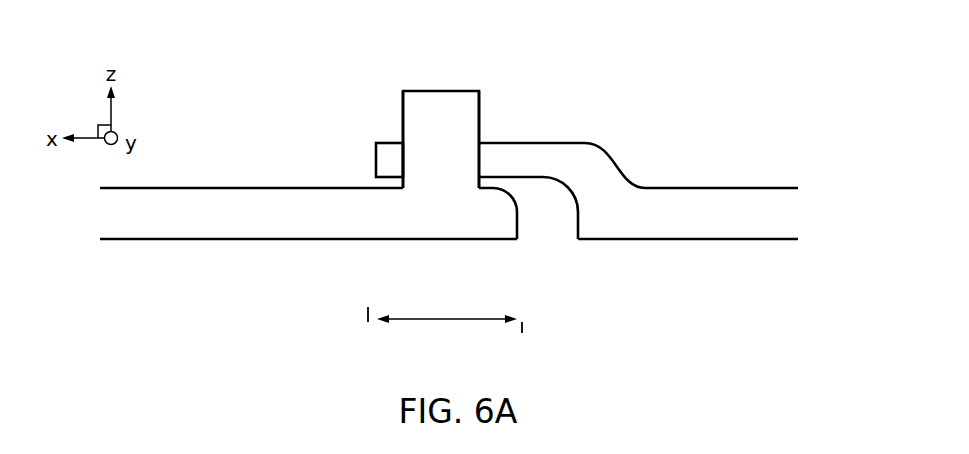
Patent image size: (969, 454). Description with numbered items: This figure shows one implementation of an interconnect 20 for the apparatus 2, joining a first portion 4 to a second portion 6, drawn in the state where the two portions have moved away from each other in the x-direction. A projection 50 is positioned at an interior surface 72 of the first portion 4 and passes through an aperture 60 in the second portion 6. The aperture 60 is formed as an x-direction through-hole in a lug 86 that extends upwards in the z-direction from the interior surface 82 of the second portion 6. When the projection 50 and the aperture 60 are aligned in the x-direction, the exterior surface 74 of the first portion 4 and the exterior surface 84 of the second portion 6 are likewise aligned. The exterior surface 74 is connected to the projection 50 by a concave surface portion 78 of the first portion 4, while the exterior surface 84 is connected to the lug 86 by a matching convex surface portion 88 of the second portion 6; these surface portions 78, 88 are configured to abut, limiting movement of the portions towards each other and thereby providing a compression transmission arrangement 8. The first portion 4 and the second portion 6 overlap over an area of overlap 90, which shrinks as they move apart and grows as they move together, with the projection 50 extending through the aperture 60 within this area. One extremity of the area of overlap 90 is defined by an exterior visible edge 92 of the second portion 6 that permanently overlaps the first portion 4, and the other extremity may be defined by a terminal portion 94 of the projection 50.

The apparatus 2 is at (192, 56).
The first portion 4 is at (775, 188).
The second portion 6 is at (452, 90).
The compression transmission arrangement 8 is at (561, 256).
The interconnect 20 is at (771, 82).
The projection 50 is at (563, 143).
The aperture 60 is at (480, 117).
The interior surface of the first portion 72 is at (698, 188).
The exterior surface of the first portion 74 is at (717, 240).
The surface portion of the first portion 78 is at (563, 183).
The interior surface of the second portion 82 is at (233, 188).
The exterior surface of the second portion 84 is at (242, 240).
The lug 86 is at (402, 105).
The surface portion of the second portion 88 is at (510, 198).
The area of overlap 90 is at (432, 320).
The exterior visible edge 92 is at (515, 242).
The terminal portion of the projection 94 is at (375, 155).